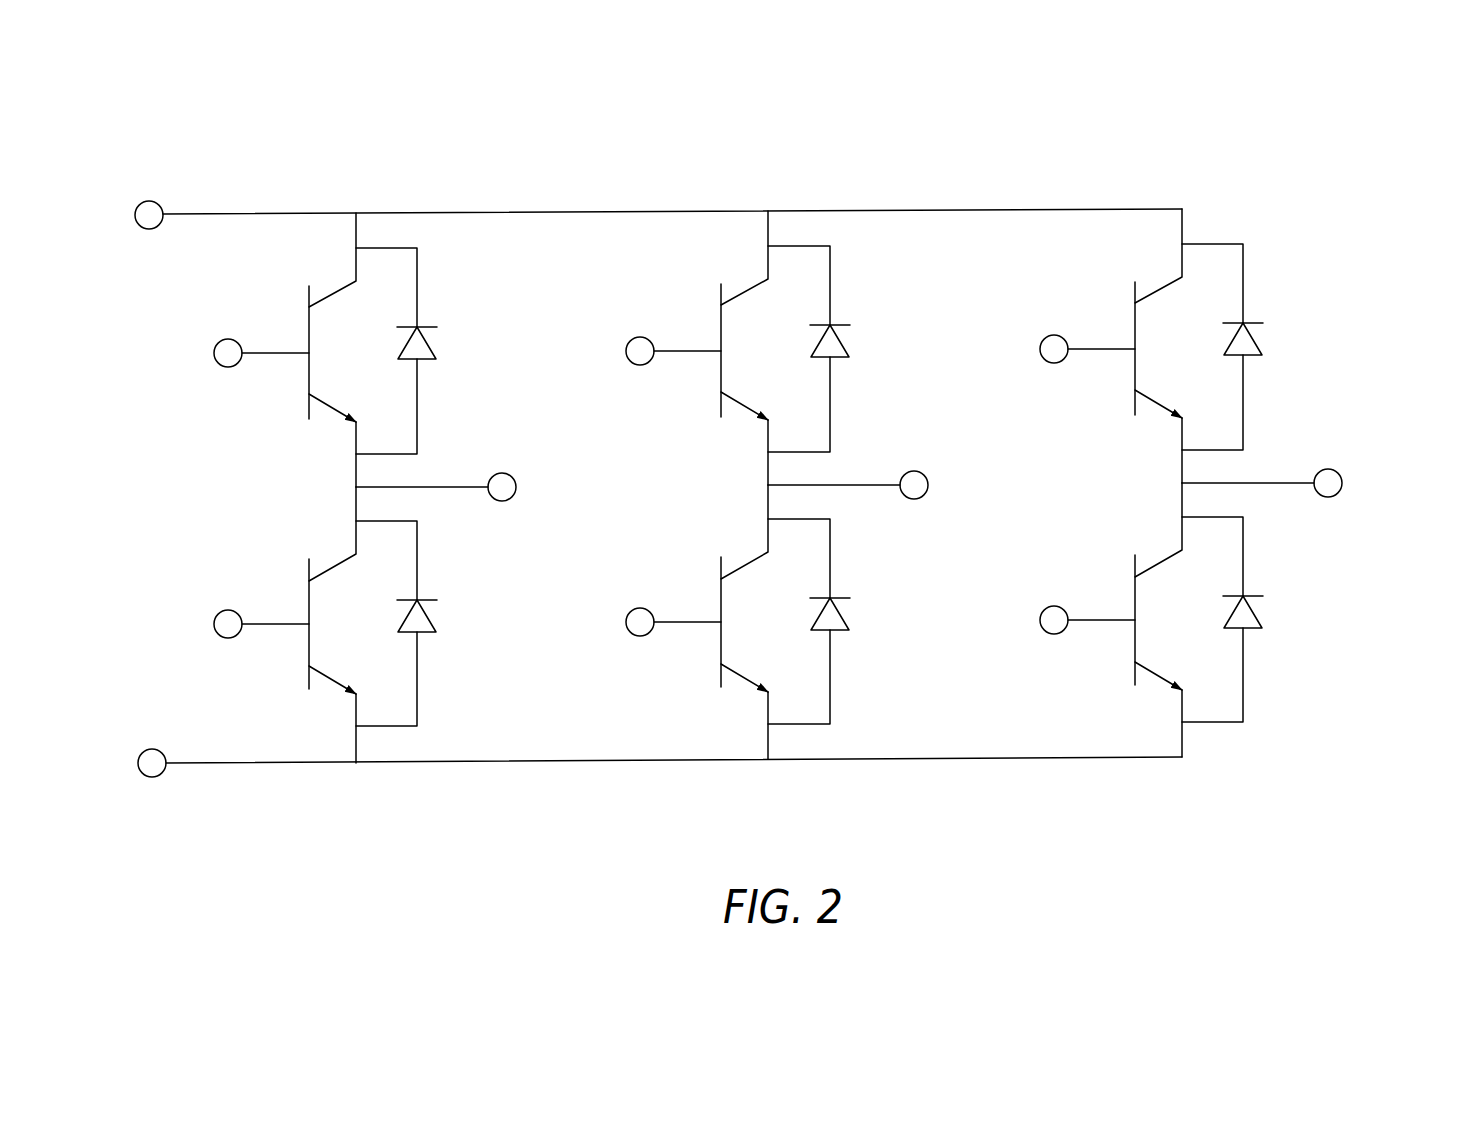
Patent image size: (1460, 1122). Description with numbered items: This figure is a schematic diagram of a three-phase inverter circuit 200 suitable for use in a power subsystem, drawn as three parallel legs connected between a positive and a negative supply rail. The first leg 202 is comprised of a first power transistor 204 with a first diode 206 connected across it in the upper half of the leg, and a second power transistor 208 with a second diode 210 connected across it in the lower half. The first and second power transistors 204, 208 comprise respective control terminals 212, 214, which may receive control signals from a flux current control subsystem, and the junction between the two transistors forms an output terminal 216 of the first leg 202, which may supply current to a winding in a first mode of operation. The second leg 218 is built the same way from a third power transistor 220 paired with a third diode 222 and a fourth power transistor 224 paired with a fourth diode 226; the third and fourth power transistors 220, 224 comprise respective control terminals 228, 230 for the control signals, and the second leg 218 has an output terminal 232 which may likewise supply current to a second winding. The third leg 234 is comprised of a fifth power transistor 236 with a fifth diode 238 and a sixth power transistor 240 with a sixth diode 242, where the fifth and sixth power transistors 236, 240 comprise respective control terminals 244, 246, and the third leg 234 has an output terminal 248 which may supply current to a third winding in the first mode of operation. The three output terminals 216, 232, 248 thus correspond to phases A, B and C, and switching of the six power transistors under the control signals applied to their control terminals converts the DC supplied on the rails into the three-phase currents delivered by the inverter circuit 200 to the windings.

The inverter circuit 200 is at (1277, 140).
The first leg 202 is at (388, 175).
The first power transistor 204 is at (292, 302).
The first diode 206 is at (447, 335).
The second power transistor 208 is at (292, 577).
The second diode 210 is at (447, 607).
The control terminal 212 is at (214, 352).
The control terminal 214 is at (214, 624).
The output terminal 216 is at (503, 473).
The second leg 218 is at (780, 175).
The third power transistor 220 is at (703, 300).
The third diode 222 is at (862, 330).
The fourth power transistor 224 is at (703, 577).
The fourth diode 226 is at (862, 607).
The control terminal 228 is at (626, 351).
The control terminal 230 is at (626, 622).
The output terminal 232 is at (915, 471).
The third leg 234 is at (1143, 170).
The fifth power transistor 236 is at (1115, 298).
The fifth diode 238 is at (1273, 327).
The sixth power transistor 240 is at (1117, 573).
The sixth diode 242 is at (1277, 600).
The control terminal 244 is at (1040, 348).
The control terminal 246 is at (1040, 620).
The output terminal 248 is at (1330, 469).